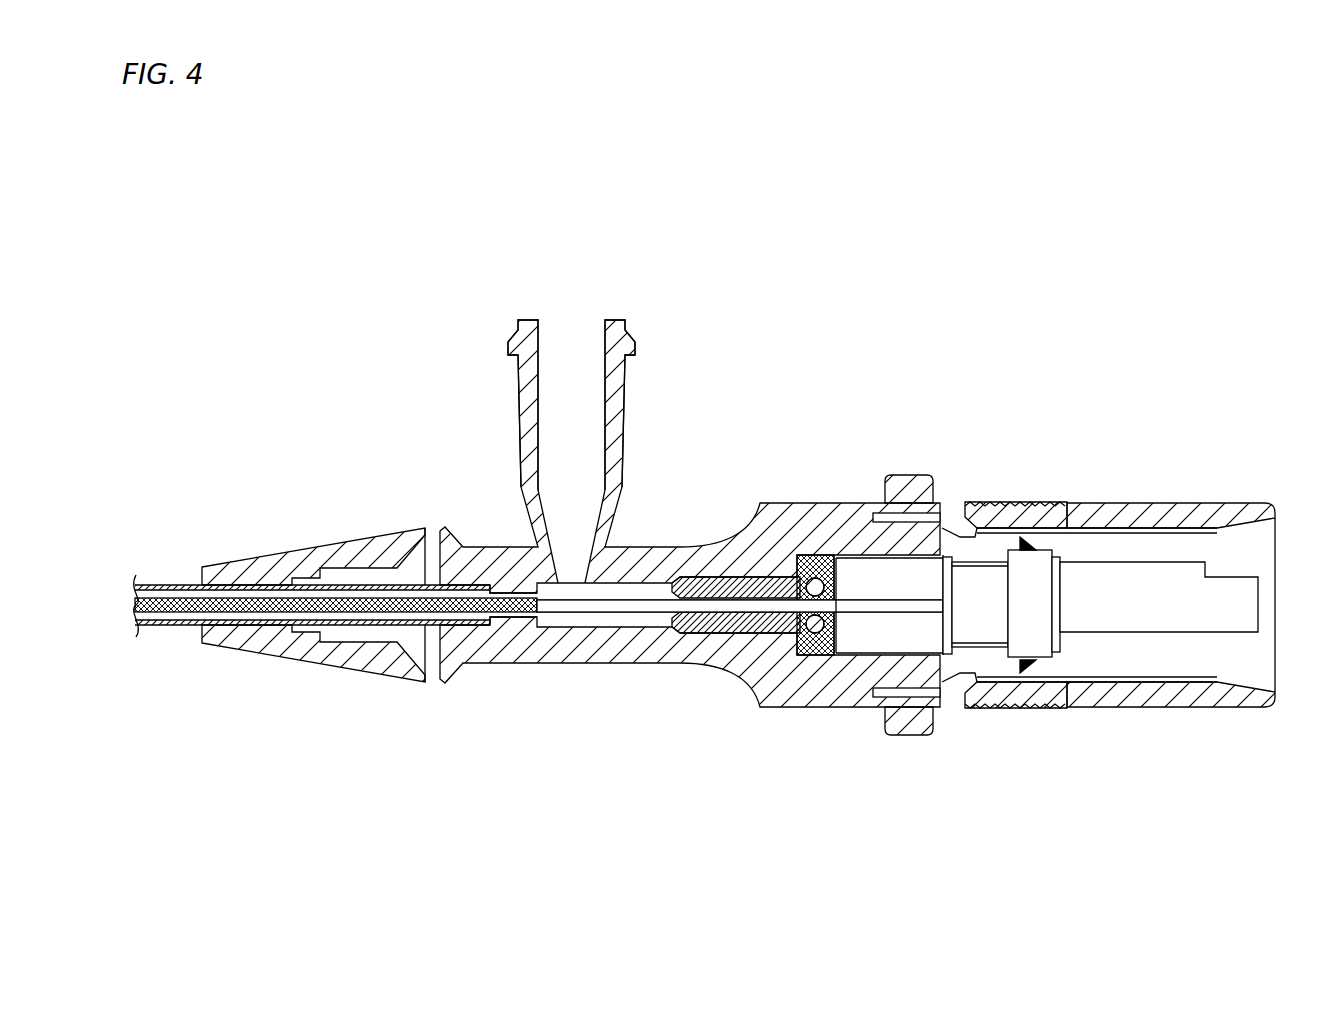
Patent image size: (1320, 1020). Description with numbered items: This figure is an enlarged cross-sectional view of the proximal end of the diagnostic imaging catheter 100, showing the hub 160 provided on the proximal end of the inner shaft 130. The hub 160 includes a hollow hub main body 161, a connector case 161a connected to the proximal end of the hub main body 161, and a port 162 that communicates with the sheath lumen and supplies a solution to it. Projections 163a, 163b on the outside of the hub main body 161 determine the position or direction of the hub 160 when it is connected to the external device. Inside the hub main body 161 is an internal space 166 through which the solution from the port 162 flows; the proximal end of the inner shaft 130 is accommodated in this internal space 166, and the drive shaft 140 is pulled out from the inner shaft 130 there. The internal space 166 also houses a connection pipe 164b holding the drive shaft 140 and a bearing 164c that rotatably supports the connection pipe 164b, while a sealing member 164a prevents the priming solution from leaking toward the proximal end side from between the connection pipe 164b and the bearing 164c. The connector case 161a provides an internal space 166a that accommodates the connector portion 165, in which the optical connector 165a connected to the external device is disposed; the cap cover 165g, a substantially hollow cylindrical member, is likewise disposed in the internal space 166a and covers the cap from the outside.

The diagnostic imaging catheter 100 is at (190, 321).
The inner shaft 130 is at (172, 583).
The drive shaft 140 is at (346, 608).
The hub 160 is at (428, 455).
The hub main body 161 is at (572, 654).
The connector case 161a is at (1172, 508).
The port 162 is at (620, 402).
The projection 163a is at (930, 467).
The projection 163b is at (914, 728).
The sealing member 164a is at (818, 566).
The connection pipe 164b is at (657, 606).
The bearing 164c is at (736, 625).
The connector portion 165 is at (1034, 480).
The optical connector 165a is at (1016, 692).
The cap cover 165g is at (1115, 634).
The internal space 166 is at (525, 622).
The internal space 166a is at (1108, 536).